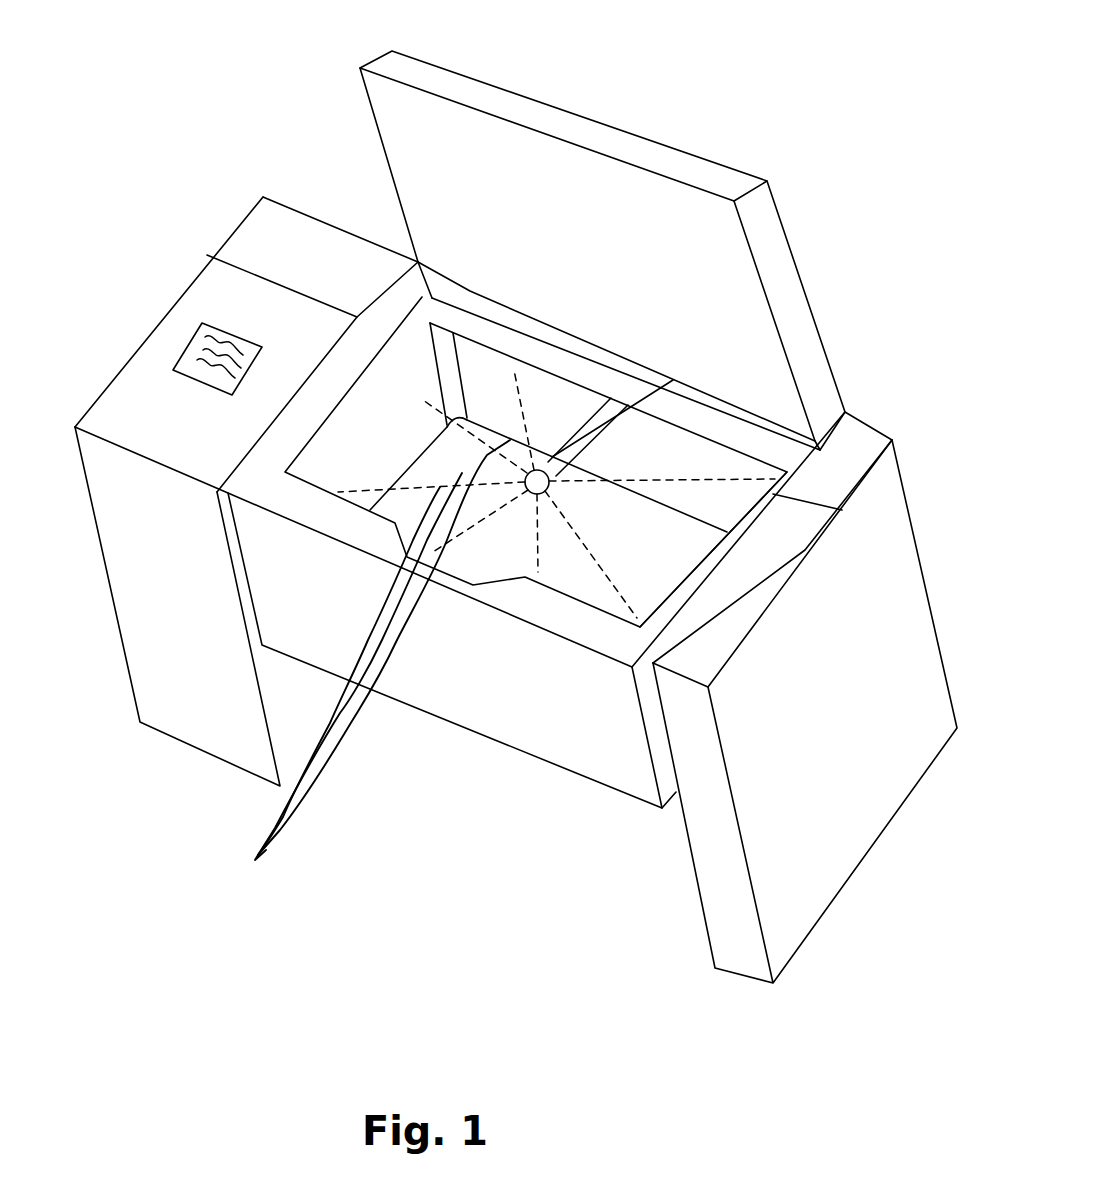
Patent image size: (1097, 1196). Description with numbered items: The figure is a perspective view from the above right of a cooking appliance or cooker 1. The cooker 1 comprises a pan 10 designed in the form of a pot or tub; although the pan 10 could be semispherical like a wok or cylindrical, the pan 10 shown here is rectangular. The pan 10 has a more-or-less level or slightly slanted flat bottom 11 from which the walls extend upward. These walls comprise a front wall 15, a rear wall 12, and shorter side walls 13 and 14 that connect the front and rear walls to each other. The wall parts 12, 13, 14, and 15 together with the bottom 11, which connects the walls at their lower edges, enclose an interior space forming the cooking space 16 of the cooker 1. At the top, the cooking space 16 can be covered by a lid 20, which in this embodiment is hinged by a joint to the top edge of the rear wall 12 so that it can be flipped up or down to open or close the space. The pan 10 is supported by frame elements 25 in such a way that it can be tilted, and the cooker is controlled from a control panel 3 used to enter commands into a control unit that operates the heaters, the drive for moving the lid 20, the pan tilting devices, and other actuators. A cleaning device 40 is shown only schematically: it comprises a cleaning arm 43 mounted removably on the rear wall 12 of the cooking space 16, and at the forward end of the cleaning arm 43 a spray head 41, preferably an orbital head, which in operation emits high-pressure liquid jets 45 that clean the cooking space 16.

The cooking appliance 1 is at (283, 80).
The control panel 3 is at (192, 348).
The pan 10 is at (525, 605).
The bottom 11 is at (667, 495).
The rear wall 12 is at (557, 407).
The side wall 13 is at (358, 428).
The side wall 14 is at (686, 576).
The front wall 15 is at (390, 533).
The cooking space 16 is at (577, 497).
The lid 20 is at (722, 165).
The frame elements 25 is at (200, 722).
The cleaning device 40 is at (612, 434).
The spray head 41 is at (527, 489).
The cleaning arm 43 is at (603, 420).
The high-pressure liquid jets 45 is at (367, 675).